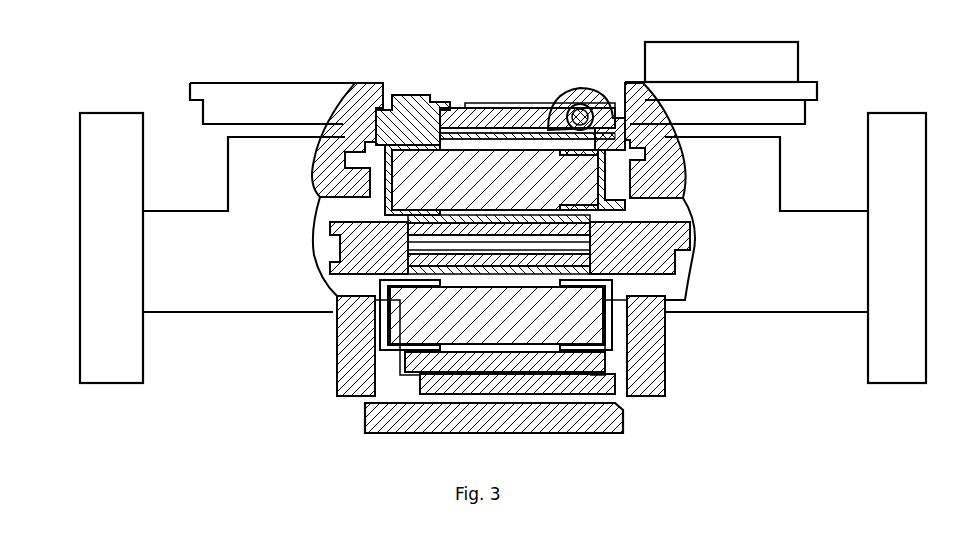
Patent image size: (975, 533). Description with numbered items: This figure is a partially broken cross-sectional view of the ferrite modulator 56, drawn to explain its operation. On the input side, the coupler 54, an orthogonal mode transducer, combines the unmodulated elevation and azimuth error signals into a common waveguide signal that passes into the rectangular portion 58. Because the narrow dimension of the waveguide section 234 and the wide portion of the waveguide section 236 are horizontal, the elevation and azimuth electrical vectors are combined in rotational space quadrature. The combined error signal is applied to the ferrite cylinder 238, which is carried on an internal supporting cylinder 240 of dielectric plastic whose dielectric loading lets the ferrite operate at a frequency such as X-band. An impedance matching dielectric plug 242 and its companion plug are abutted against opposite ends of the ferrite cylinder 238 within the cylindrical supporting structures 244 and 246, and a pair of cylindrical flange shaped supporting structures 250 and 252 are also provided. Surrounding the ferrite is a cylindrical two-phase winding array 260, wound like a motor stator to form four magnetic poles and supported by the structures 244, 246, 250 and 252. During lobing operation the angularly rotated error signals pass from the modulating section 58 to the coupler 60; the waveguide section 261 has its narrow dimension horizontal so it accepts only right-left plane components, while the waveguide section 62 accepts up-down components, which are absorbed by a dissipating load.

The coupler 54 is at (274, 276).
The ferrite modulator 56 is at (512, 102).
The rectangular portion 58 is at (511, 418).
The coupler 60 is at (803, 263).
The waveguide section 62 is at (742, 54).
The waveguide section 234 is at (180, 303).
The waveguide section 236 is at (267, 124).
The ferrite cylinder 238 is at (532, 215).
The internal supporting cylinder 240 is at (470, 230).
The impedance matching dielectric plug 242 is at (330, 224).
The cylindrical supporting structure 244 is at (412, 97).
The cylindrical supporting structure 246 is at (598, 95).
The cylindrical flange shaped supporting structure 250 is at (392, 178).
The cylindrical flange shaped supporting structure 252 is at (622, 205).
The two-phase winding array 260 is at (516, 321).
The waveguide section 261 is at (806, 222).